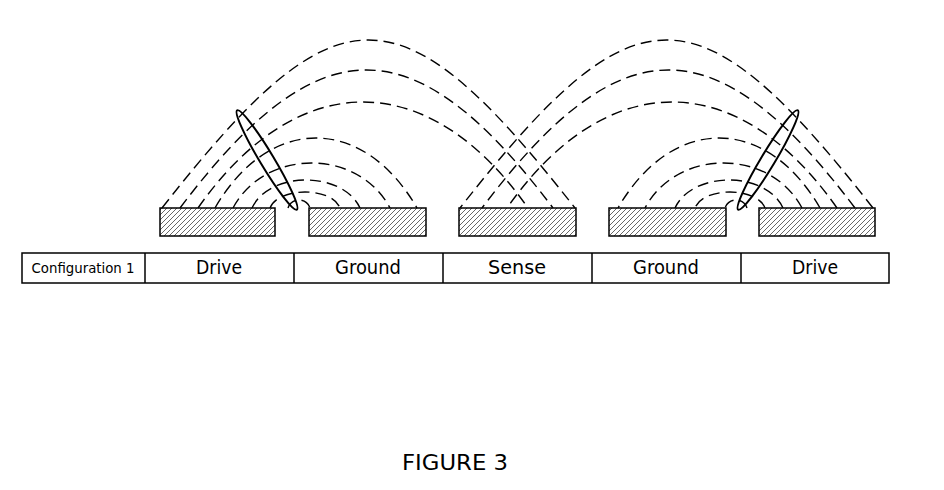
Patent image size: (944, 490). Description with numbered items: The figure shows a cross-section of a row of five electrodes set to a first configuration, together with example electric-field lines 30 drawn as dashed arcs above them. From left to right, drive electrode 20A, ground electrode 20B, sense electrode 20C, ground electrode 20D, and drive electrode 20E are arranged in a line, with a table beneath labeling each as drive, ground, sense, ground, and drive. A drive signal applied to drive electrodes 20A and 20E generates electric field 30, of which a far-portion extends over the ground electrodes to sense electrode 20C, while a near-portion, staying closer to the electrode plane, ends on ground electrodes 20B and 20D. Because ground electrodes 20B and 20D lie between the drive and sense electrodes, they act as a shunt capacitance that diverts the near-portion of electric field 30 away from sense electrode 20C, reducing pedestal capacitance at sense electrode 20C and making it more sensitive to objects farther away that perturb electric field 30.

The drive electrode 20A is at (203, 232).
The ground electrode 20B is at (353, 232).
The sense electrode 20C is at (500, 232).
The ground electrode 20D is at (650, 232).
The drive electrode 20E is at (799, 232).
The electric-field lines 30 is at (236, 110).